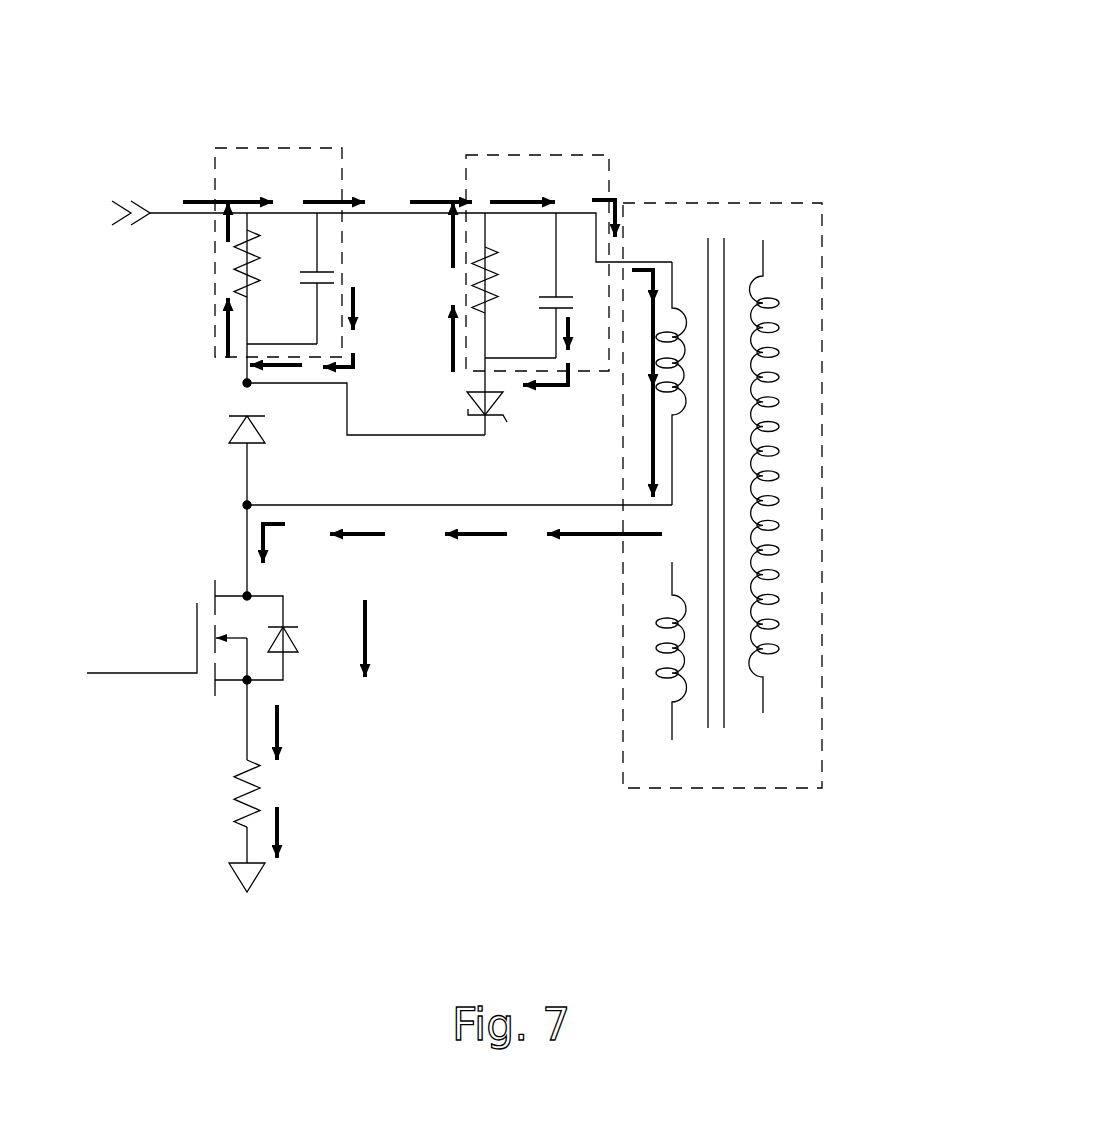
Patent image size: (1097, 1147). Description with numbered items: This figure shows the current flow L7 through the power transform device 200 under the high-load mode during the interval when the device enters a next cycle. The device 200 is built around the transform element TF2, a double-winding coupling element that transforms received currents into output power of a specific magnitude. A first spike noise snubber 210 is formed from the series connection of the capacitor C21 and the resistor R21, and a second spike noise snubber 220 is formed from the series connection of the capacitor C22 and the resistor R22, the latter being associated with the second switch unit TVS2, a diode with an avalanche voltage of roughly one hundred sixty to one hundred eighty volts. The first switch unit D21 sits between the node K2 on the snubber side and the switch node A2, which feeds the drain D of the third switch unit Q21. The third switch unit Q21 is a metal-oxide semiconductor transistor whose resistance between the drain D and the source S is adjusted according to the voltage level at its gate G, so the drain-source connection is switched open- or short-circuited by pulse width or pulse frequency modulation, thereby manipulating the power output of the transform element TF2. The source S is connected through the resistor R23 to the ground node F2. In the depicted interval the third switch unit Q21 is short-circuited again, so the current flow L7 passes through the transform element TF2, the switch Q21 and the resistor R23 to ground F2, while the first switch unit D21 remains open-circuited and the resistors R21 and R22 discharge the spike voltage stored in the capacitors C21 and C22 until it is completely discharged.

The power transform device 200 is at (773, 90).
The first spike noise snubber 210 is at (282, 148).
The second spike noise snubber 220 is at (528, 155).
The transform element TF2 is at (757, 202).
The resistor R21 is at (267, 259).
The capacitor C21 is at (302, 297).
The cathode node K2 is at (228, 383).
The first switch unit D21 is at (225, 442).
The switch node A2 is at (225, 505).
The resistor R22 is at (509, 280).
The capacitor C22 is at (540, 320).
The second switch unit TVS2 is at (453, 413).
The third switch unit Q21 is at (222, 638).
The drain D is at (234, 554).
The gate G is at (139, 662).
The source S is at (236, 712).
The resistor R23 is at (223, 793).
The ground node F2 is at (263, 887).
The current flow L7 is at (422, 516).